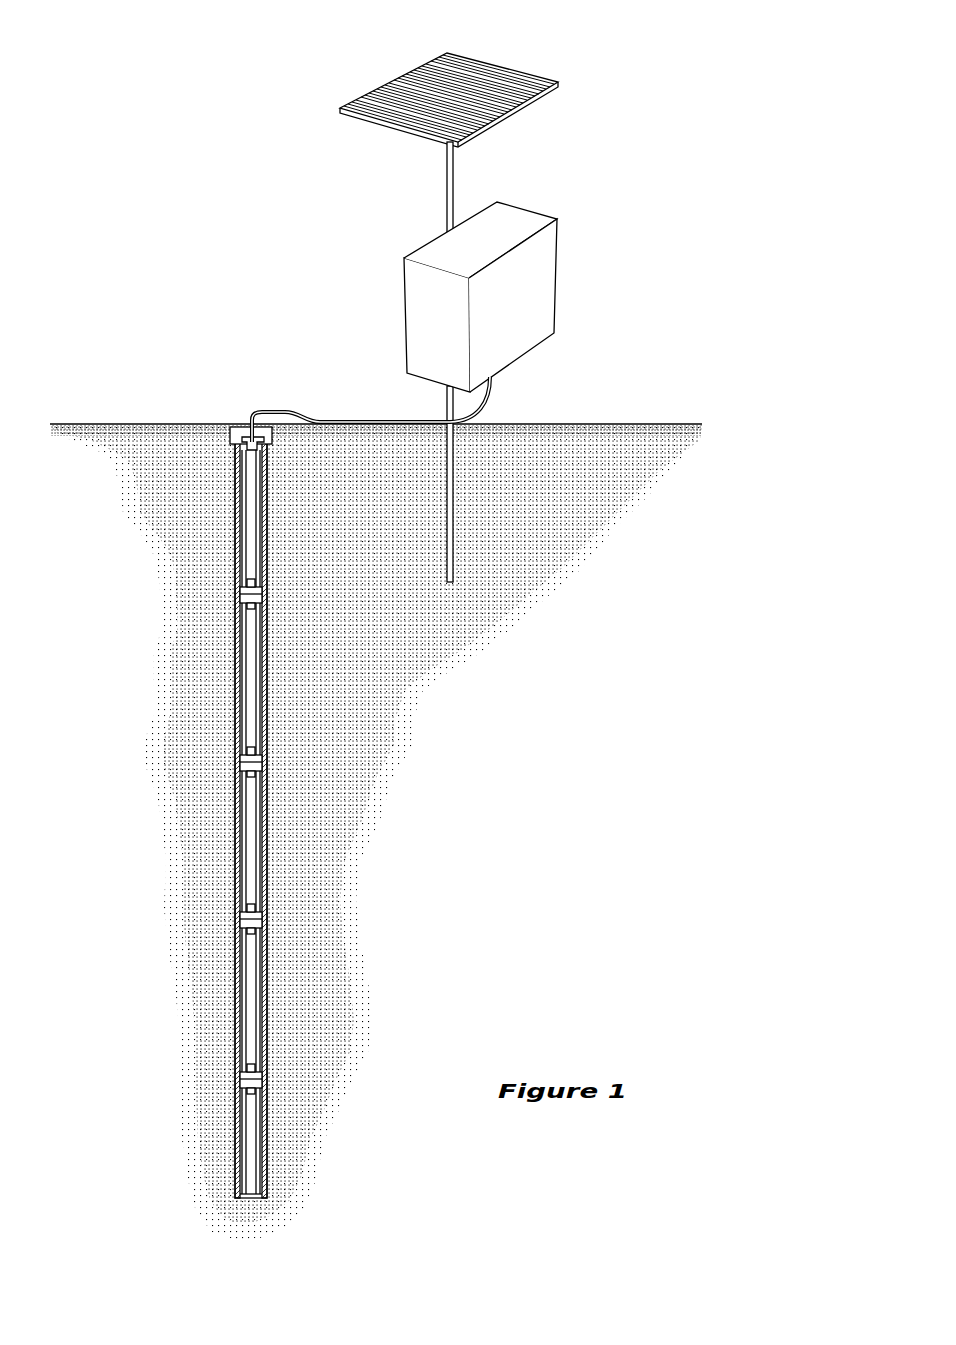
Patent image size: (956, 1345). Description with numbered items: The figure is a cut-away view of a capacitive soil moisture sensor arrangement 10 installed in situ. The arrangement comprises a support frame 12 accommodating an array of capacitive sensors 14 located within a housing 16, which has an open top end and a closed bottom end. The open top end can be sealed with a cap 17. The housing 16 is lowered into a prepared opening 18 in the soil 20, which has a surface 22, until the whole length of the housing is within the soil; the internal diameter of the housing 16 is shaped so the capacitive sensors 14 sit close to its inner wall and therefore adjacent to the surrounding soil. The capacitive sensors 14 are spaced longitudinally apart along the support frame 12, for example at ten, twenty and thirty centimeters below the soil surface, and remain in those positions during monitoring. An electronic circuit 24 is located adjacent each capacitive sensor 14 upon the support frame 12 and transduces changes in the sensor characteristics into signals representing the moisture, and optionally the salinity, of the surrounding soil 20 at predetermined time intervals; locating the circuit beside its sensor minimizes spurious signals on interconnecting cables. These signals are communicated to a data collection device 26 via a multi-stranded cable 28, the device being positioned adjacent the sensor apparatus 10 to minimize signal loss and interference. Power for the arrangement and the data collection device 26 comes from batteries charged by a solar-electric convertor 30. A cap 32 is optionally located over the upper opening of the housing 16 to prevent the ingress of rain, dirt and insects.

The capacitive soil moisture sensor arrangement 10 is at (112, 408).
The support frame 12 is at (252, 995).
The capacitive sensors 14 is at (240, 594).
The housing 16 is at (233, 463).
The cap 17 is at (264, 420).
The prepared opening 18 is at (238, 427).
The soil 20 is at (598, 566).
The surface 22 is at (603, 418).
The electronic circuit 24 is at (240, 607).
The data collection device 26 is at (528, 276).
The multi-stranded cable 28 is at (288, 405).
The solar-electric convertor 30 is at (392, 88).
The cap 32 is at (229, 422).